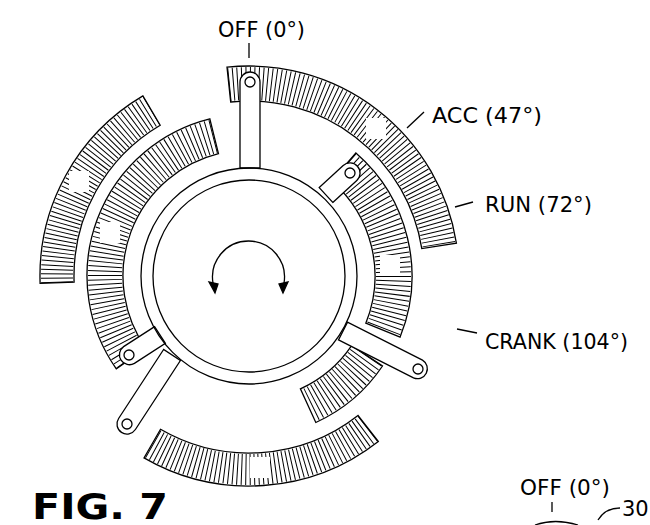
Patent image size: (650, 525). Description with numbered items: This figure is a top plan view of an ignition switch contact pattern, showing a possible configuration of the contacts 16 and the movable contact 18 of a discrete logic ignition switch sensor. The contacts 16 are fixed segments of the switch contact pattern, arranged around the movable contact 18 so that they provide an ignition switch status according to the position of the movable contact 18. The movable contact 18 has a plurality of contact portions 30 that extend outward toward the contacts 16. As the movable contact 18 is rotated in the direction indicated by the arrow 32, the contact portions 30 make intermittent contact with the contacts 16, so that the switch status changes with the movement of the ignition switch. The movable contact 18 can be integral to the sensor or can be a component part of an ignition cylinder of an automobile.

The contacts 16 is at (108, 143).
The moving contact 18 is at (171, 222).
The contact portions 30 is at (252, 131).
The arrow 32 is at (249, 239).